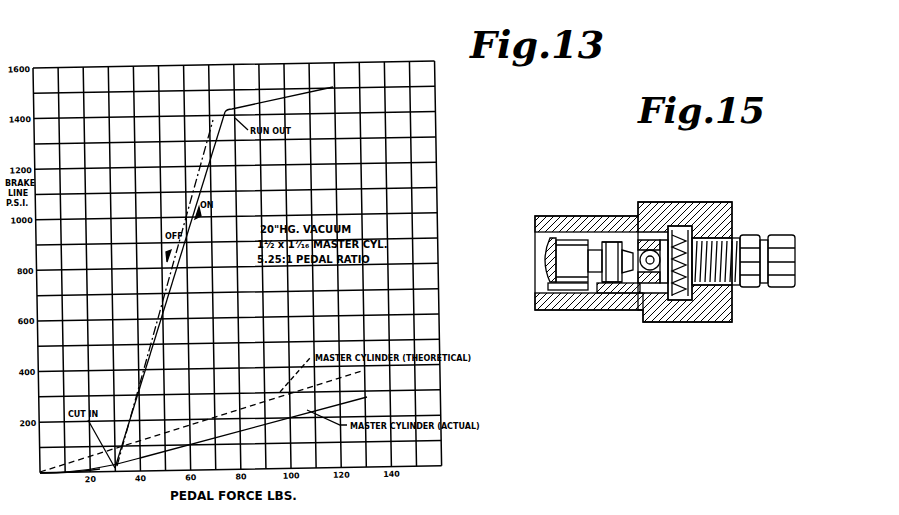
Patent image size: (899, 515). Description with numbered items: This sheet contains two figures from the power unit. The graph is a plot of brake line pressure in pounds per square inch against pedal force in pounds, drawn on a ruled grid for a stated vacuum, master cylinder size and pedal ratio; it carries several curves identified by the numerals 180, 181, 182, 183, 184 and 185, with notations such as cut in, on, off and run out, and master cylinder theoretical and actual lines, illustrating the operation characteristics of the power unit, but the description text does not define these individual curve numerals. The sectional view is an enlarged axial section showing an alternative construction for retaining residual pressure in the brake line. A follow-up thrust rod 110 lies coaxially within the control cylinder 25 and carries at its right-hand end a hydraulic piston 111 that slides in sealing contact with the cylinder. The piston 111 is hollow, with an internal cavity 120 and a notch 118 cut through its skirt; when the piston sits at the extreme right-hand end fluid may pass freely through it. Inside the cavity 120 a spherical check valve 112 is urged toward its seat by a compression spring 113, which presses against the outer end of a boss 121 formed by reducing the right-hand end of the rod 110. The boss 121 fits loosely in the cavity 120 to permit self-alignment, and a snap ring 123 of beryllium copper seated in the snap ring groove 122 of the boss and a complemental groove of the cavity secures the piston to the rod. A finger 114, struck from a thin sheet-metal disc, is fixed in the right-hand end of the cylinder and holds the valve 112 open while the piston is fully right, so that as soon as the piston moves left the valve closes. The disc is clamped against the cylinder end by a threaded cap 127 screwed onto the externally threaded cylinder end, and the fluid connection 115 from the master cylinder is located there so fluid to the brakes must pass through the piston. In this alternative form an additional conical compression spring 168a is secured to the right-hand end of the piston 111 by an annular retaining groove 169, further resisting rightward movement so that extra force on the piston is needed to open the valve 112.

In FIG. 13, the initial master cylinder pressure curve 180 is at (67, 468).
In FIG. 13, the master cylinder actual pressure curve 181 is at (257, 427).
In FIG. 13, the brake line pressure curve (on) 182 is at (165, 300).
In FIG. 13, the brake line pressure curve (off) 183 is at (188, 215).
In FIG. 13, the run out curve 184 is at (263, 102).
In FIG. 13, the master cylinder theoretical curve 185 is at (200, 423).
In FIG. 15, the control cylinder 25 is at (552, 217).
In FIG. 15, the follow-up thrust rod 110 is at (577, 288).
In FIG. 15, the hydraulic piston 111 is at (653, 240).
In FIG. 15, the check valve 112 is at (635, 245).
In FIG. 15, the compression spring 113 is at (630, 273).
In FIG. 15, the finger 114 is at (707, 240).
In FIG. 15, the fluid connection 115 is at (775, 287).
In FIG. 15, the notch 118 is at (605, 242).
In FIG. 15, the internal cavity 120 is at (640, 282).
In FIG. 15, the boss 121 is at (608, 297).
In FIG. 15, the snap ring groove 122 is at (583, 263).
In FIG. 15, the snap ring 123 is at (590, 250).
In FIG. 15, the threaded cap 127 is at (702, 317).
In FIG. 15, the conical compression spring 168a is at (692, 237).
In FIG. 15, the annular retaining groove 169 is at (664, 283).